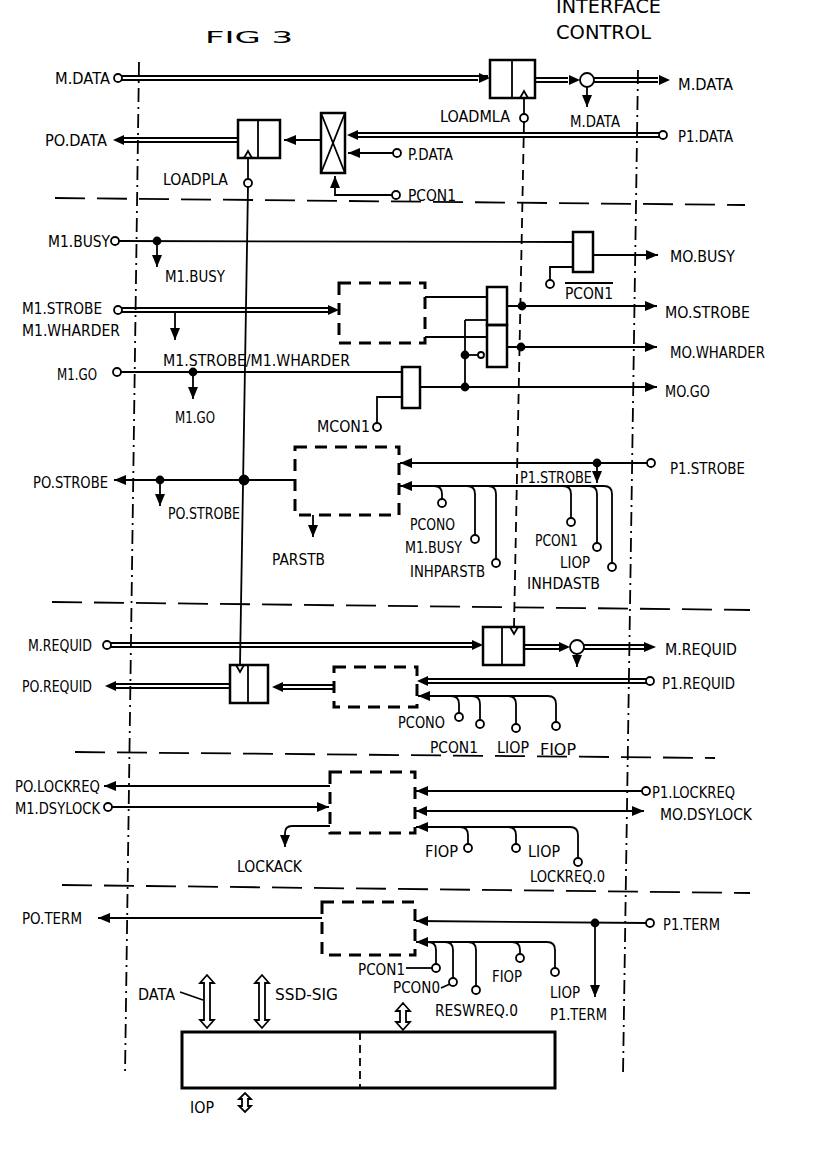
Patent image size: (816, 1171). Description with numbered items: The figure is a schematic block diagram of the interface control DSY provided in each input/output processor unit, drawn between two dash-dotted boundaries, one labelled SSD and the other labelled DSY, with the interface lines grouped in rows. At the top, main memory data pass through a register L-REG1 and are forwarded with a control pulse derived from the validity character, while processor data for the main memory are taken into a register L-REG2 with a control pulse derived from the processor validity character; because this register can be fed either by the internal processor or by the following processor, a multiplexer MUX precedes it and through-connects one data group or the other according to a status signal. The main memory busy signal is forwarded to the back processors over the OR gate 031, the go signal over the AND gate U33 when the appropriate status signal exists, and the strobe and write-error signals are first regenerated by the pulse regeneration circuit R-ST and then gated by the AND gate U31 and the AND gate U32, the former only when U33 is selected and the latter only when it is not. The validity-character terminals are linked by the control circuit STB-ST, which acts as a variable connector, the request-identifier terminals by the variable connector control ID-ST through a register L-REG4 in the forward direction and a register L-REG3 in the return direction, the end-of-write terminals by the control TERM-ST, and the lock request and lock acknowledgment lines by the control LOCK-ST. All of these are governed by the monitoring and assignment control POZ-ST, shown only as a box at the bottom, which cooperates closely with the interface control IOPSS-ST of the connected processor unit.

The SSD interface boundary SSD is at (141, 555).
The interface control DSY is at (652, 70).
The register L-REG1 is at (490, 67).
The register L-REG2 is at (296, 108).
The register L-REG3 is at (538, 628).
The register L-REG4 is at (247, 722).
The multiplexer MUX is at (300, 215).
The OR gate 031 is at (647, 228).
The AND gate U31 is at (493, 296).
The AND gate U32 is at (507, 336).
The AND gate U33 is at (402, 389).
The pulse regeneration circuit R-ST is at (339, 286).
The control circuit STB-ST is at (362, 517).
The variable connector control ID-ST is at (335, 702).
The control LOCK-ST is at (420, 862).
The control TERM-ST is at (368, 928).
The interface control IOPSS-ST is at (182, 1080).
The monitoring and assignment control POZ-ST is at (397, 1088).